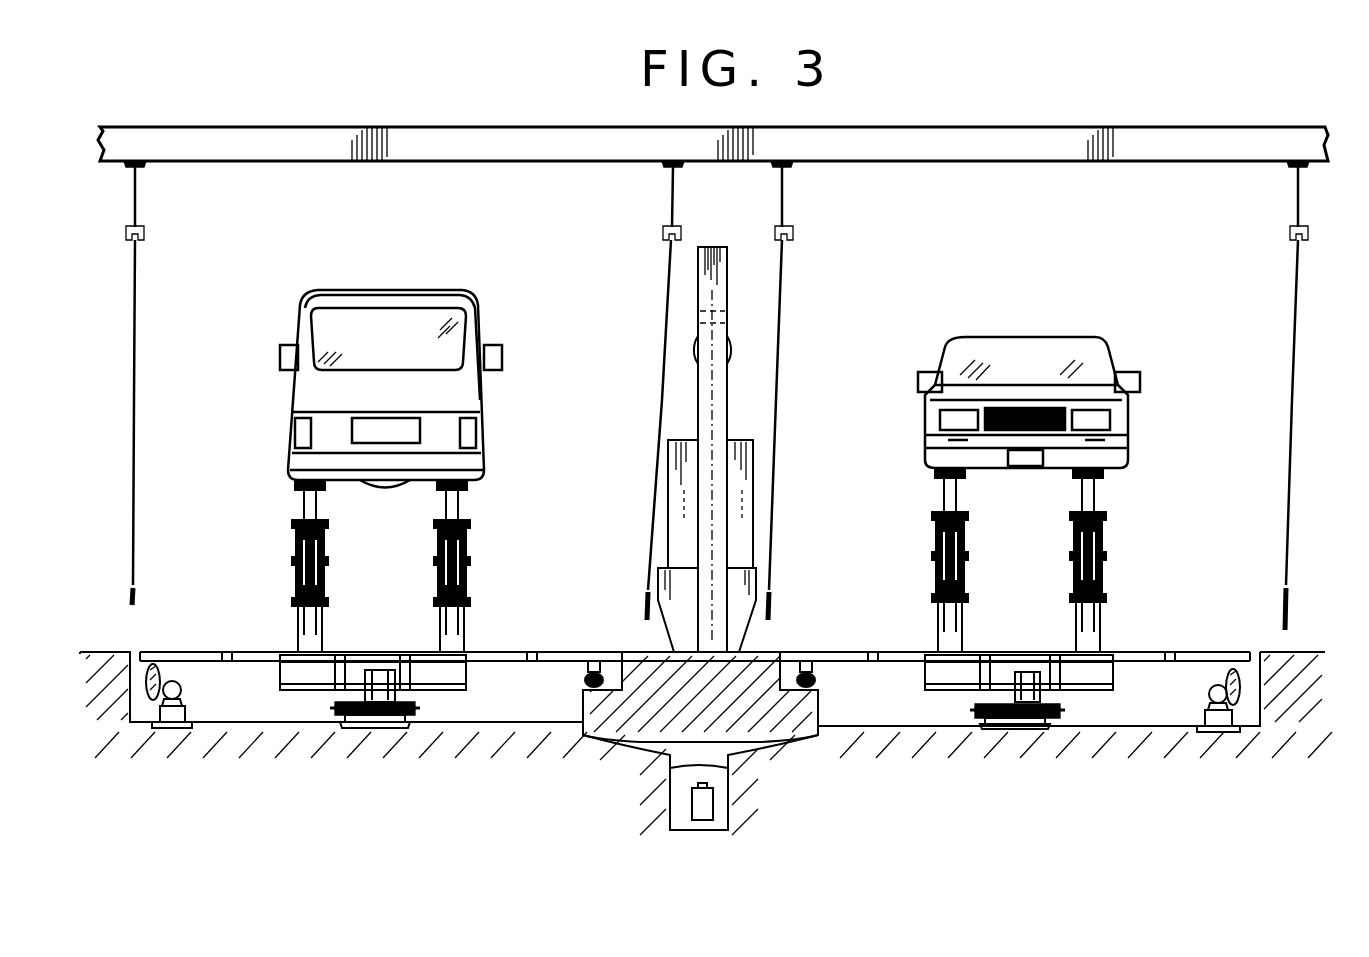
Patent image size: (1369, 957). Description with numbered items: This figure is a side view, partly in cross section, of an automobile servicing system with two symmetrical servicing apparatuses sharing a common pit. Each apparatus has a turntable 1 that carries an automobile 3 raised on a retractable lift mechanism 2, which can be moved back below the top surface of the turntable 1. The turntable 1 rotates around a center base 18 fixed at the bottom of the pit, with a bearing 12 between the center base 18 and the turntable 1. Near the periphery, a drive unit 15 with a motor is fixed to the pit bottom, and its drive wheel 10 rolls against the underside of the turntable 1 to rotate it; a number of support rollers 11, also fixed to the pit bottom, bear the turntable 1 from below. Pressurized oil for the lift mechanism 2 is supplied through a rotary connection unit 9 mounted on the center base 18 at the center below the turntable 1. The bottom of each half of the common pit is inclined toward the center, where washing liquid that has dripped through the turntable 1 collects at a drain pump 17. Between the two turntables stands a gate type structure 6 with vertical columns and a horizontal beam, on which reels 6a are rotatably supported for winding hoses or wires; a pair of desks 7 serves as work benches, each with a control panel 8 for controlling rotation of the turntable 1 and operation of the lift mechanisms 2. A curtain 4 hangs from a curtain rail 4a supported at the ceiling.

The turntable 1 is at (254, 676).
The lift mechanism 2 is at (470, 552).
The automobile 3 is at (437, 302).
The curtain 4 is at (140, 530).
The curtain rail 4a is at (146, 233).
The gate type structure 6 is at (728, 390).
The reel 6a is at (733, 341).
The desk 7 is at (745, 575).
The control panel 8 is at (750, 490).
The rotary connection unit 9 is at (344, 682).
The drive wheel 10 is at (146, 684).
The support roller 11 is at (582, 681).
The bearing 12 is at (400, 702).
The drive unit 15 is at (180, 688).
The drain pump 17 is at (716, 805).
The center base 18 is at (386, 718).